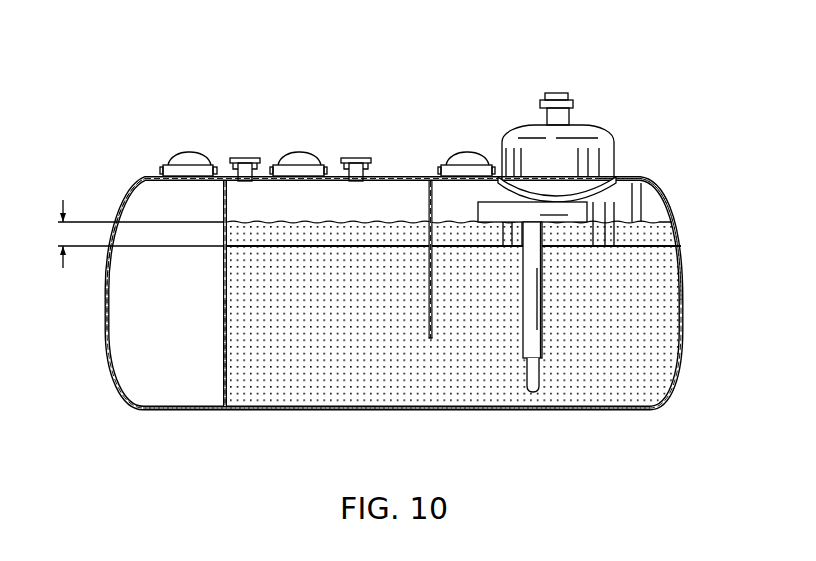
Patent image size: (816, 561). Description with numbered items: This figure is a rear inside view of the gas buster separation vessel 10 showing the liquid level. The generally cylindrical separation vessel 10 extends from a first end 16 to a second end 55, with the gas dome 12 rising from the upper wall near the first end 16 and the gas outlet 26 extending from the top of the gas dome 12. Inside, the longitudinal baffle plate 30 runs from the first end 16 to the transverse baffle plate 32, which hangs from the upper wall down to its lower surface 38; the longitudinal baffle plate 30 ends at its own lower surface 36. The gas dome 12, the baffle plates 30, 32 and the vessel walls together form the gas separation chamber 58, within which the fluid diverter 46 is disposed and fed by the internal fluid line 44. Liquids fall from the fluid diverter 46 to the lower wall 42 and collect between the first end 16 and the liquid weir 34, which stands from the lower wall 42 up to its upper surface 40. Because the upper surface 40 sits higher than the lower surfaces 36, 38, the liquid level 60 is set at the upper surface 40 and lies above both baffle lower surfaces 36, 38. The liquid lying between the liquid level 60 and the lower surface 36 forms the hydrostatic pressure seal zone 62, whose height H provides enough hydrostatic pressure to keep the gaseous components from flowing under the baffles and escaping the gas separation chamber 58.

The separation vessel 10 is at (120, 126).
The gas dome 12 is at (597, 124).
The first end 16 is at (684, 298).
The gas outlet 26 is at (558, 92).
The longitudinal baffle plate 30 is at (660, 208).
The transverse baffle plate 32 is at (433, 332).
The liquid weir 34 is at (222, 385).
The lower surface 36 is at (632, 248).
The lower surface 38 is at (436, 338).
The upper surface 40 is at (223, 222).
The lower wall 42 is at (552, 410).
The internal fluid line 44 is at (543, 312).
The fluid diverter 46 is at (573, 208).
The second end 55 is at (106, 326).
The gas separation chamber 58 is at (470, 190).
The liquid level 60 is at (413, 222).
The hydrostatic pressure seal zone 62 is at (668, 233).